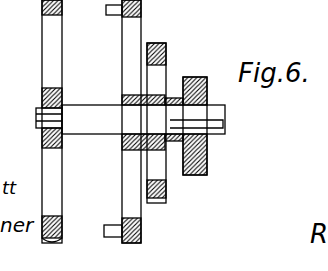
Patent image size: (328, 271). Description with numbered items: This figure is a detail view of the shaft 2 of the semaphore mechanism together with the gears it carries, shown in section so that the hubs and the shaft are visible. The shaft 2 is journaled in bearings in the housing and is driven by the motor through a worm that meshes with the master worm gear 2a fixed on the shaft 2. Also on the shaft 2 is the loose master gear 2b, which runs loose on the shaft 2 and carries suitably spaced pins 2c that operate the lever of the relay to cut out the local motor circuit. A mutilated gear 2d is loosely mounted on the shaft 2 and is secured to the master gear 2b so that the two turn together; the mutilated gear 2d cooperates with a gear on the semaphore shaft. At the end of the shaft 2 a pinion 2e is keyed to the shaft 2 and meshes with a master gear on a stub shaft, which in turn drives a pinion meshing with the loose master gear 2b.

The shaft 2 is at (83, 110).
The master worm gear 2a is at (52, 39).
The loose master gear 2b is at (124, 33).
The pins 2c is at (108, 232).
The mutilated gear 2d is at (168, 45).
The pinion 2e is at (207, 160).